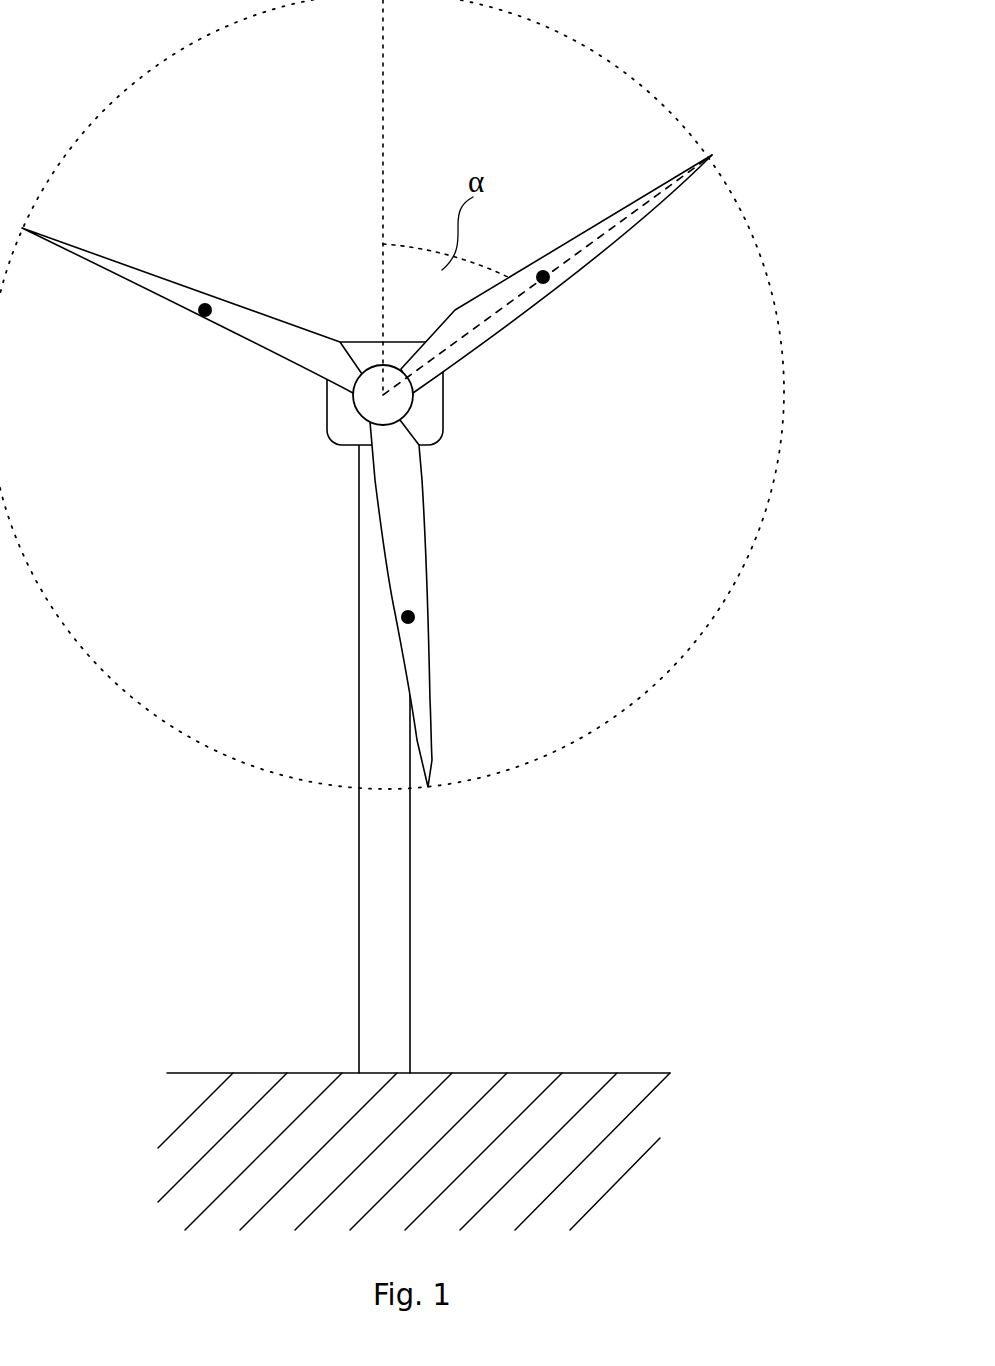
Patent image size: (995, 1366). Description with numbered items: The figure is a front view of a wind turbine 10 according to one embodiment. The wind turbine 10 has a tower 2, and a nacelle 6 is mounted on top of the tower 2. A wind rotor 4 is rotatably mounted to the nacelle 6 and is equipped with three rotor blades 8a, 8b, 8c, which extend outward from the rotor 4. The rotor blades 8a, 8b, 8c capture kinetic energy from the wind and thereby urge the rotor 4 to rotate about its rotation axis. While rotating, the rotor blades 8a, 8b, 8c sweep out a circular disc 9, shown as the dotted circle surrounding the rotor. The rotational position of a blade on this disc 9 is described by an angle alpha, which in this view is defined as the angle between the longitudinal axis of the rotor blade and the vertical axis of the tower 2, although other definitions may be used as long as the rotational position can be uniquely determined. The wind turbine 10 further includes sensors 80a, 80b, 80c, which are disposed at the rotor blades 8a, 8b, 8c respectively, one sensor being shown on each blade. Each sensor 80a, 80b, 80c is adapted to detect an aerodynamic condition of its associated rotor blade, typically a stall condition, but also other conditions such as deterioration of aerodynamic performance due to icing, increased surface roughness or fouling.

The wind turbine 10 is at (808, 88).
The tower 2 is at (410, 953).
The nacelle 6 is at (340, 427).
The wind rotor 4 is at (412, 407).
The rotor blade 8a is at (597, 264).
The rotor blade 8b is at (433, 740).
The rotor blade 8c is at (65, 238).
The sensor 80a is at (549, 283).
The sensor 80b is at (404, 617).
The sensor 80c is at (212, 308).
The circular disc 9 is at (642, 695).